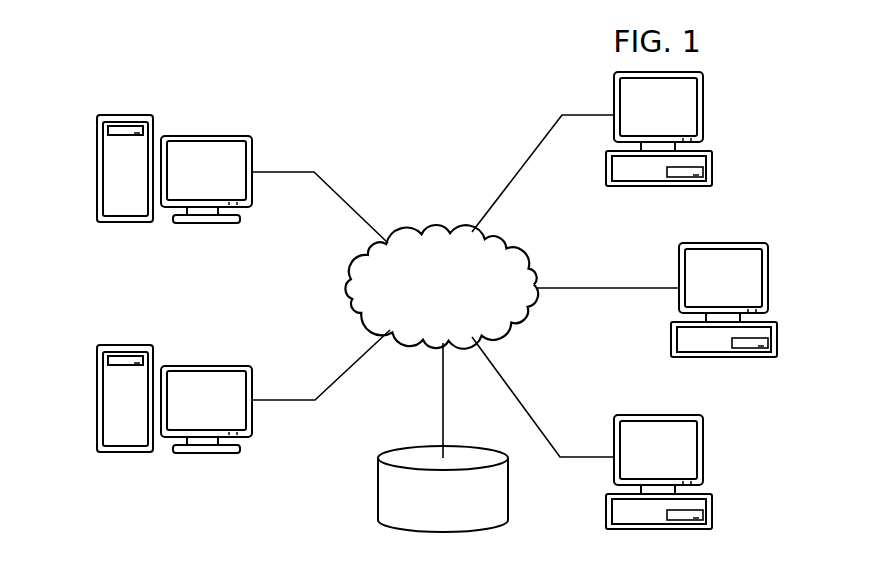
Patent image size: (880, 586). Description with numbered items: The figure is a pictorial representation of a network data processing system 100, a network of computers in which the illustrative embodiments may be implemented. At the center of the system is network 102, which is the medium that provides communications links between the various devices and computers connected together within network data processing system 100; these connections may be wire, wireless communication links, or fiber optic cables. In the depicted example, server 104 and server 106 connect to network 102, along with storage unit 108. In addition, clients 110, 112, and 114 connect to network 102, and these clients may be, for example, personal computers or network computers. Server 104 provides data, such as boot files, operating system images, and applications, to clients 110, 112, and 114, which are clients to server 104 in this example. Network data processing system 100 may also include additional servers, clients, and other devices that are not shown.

The network data processing system 100 is at (322, 88).
The network 102 is at (438, 229).
The server 104 is at (98, 168).
The server 106 is at (98, 398).
The storage unit 108 is at (378, 490).
The client 110 is at (712, 168).
The client 112 is at (777, 339).
The client 114 is at (712, 512).